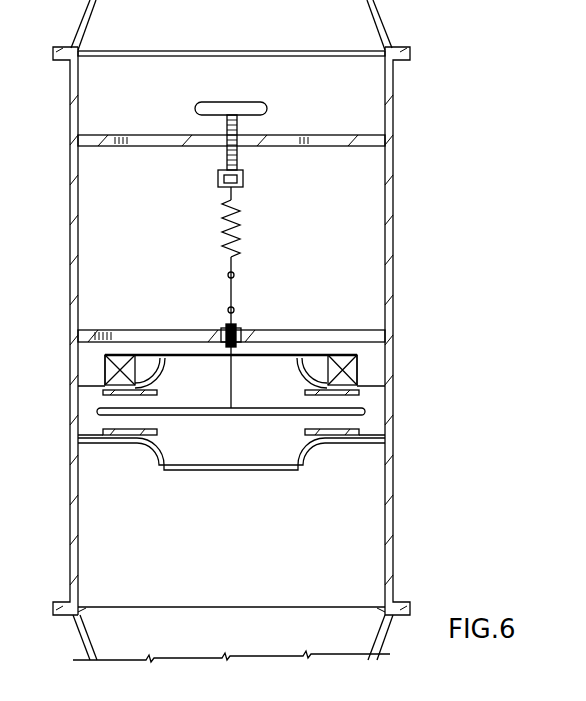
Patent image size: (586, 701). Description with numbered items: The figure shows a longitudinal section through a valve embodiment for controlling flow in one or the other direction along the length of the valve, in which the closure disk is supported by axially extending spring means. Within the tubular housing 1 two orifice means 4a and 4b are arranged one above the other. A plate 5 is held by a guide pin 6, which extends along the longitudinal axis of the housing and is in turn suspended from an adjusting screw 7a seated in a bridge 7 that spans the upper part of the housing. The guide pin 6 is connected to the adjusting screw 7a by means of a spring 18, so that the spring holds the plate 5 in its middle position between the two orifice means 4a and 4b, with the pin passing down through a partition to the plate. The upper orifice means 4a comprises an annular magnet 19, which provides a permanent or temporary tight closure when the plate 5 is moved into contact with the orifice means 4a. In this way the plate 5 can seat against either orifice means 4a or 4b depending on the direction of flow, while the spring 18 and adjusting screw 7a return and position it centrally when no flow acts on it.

The tubular housing 1 is at (393, 249).
The bridge 7 is at (368, 134).
The adjusting screw 7a is at (254, 103).
The spring 18 is at (245, 222).
The annular magnet 19 is at (355, 365).
The guide pin 6 is at (232, 387).
The orifice means 4a is at (372, 382).
The orifice means 4b is at (363, 438).
The plate 5 is at (283, 418).